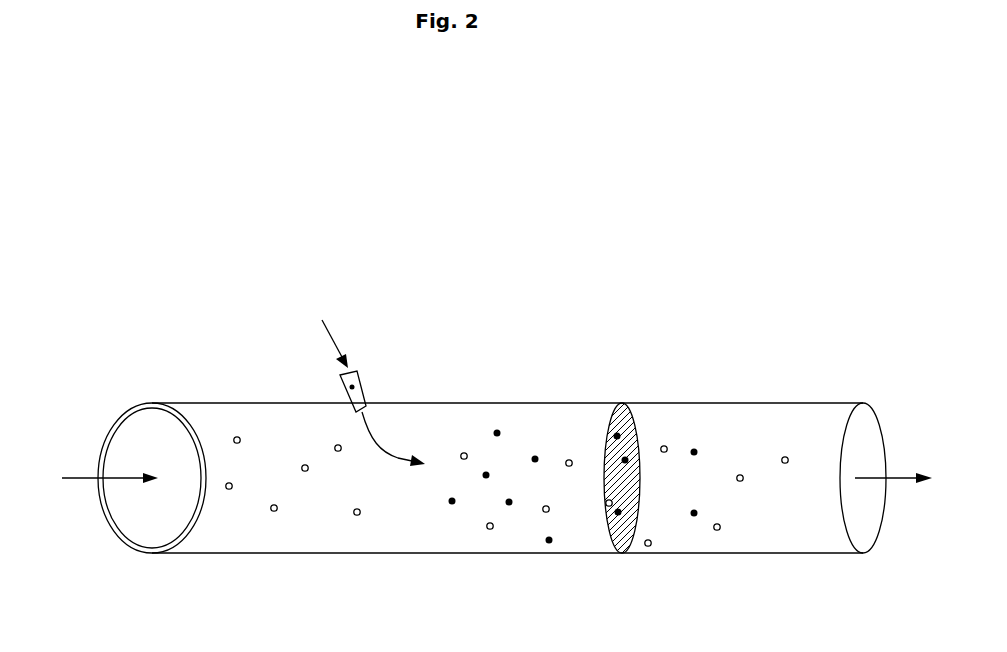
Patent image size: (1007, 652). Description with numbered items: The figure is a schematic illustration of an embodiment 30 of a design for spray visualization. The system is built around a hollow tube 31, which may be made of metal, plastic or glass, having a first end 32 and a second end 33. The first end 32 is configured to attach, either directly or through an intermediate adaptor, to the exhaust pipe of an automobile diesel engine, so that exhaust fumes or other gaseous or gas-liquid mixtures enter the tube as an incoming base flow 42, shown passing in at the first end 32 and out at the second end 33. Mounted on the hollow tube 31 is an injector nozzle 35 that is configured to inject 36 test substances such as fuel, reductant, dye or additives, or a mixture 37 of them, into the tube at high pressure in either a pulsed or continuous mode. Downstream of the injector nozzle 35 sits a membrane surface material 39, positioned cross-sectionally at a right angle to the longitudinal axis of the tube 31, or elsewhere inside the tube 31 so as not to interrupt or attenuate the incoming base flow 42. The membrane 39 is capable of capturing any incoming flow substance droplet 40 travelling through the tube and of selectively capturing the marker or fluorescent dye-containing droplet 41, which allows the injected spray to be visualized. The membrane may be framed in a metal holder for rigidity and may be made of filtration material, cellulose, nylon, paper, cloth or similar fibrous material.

The embodiment of a design for spray visualization 30 is at (275, 180).
The hollow tube 31 is at (257, 424).
The first end 32 is at (150, 403).
The second end 33 is at (861, 415).
The injector nozzle 35 is at (333, 335).
The injection 36 is at (386, 450).
The mixture 37 is at (359, 374).
The membrane surface material 39 is at (620, 418).
The incoming flow substance droplet 40 is at (272, 515).
The marker/fluorescent dye-containing droplet 41 is at (547, 542).
The incoming base flow 42 is at (85, 475).